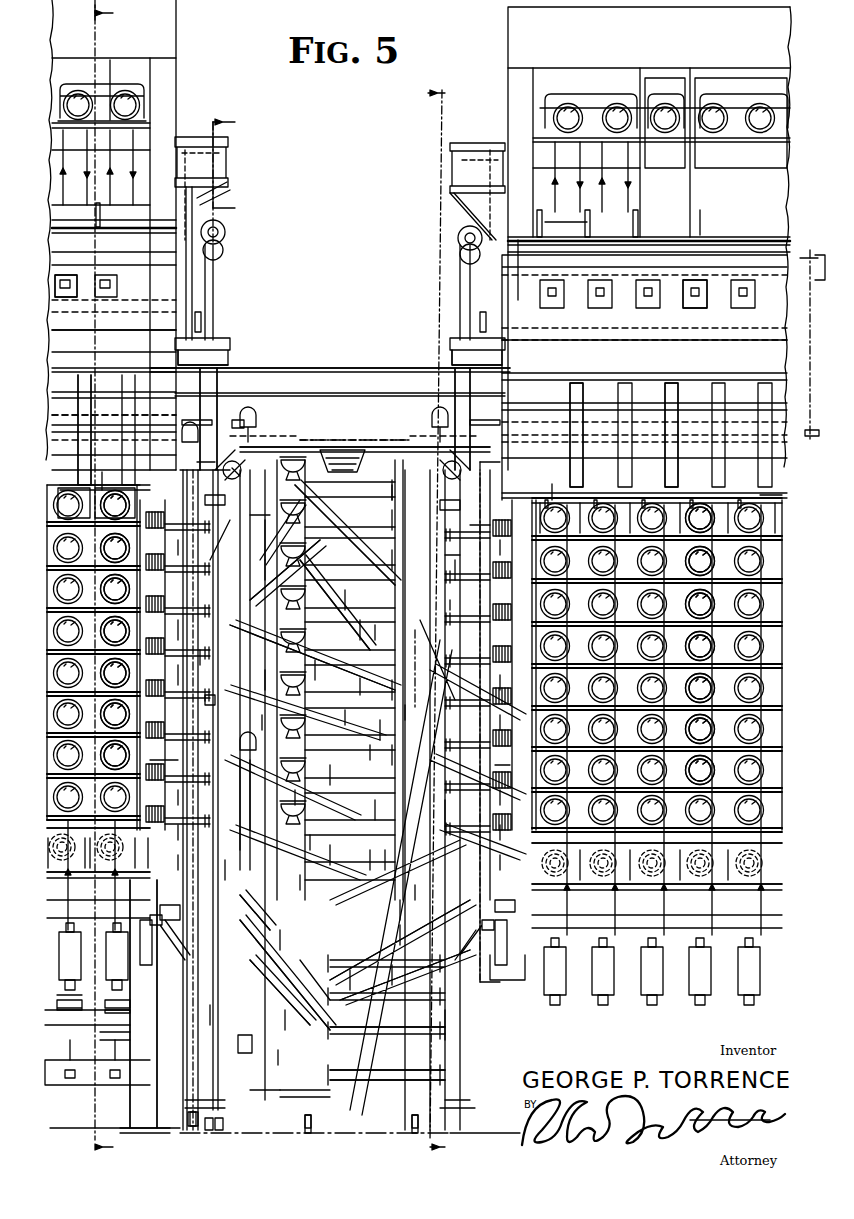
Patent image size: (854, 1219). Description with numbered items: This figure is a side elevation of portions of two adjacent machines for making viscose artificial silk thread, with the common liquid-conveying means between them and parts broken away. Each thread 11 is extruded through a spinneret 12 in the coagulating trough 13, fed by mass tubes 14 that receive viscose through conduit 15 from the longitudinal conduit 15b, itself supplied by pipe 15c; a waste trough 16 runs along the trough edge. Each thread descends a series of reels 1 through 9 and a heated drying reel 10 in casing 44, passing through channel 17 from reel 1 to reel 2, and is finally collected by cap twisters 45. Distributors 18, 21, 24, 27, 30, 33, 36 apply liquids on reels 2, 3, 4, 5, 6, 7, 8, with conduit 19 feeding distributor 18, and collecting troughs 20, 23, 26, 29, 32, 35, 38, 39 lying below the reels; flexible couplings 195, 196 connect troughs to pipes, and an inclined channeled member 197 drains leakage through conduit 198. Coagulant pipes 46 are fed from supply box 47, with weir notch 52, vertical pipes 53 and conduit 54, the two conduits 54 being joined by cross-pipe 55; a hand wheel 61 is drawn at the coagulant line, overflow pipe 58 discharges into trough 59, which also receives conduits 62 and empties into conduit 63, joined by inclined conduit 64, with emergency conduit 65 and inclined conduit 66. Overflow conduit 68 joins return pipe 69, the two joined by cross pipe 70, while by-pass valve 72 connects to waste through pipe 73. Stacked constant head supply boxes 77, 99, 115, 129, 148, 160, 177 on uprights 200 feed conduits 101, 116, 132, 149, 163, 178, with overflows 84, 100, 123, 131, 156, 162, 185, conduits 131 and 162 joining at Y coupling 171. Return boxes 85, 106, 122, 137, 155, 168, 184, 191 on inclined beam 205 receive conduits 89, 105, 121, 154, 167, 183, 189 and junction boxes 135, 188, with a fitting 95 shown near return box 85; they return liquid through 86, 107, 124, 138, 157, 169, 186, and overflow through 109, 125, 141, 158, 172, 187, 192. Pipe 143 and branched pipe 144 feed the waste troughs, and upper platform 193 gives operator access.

The thread-advancing reel 1 is at (107, 583).
The thread-advancing reel 2 is at (409, 626).
The thread-advancing reel 3 is at (409, 722).
The thread-advancing reel 4 is at (409, 722).
The thread-advancing reel 5 is at (409, 639).
The thread-advancing reel 6 is at (409, 578).
The thread-advancing reel 7 is at (409, 722).
The thread-advancing reel 8 is at (409, 703).
The thread-advancing reel 9 is at (409, 804).
The heated reel 10 is at (745, 875).
The thread 11 is at (630, 201).
The spinneret 12 is at (778, 550).
The coagulating trough 13 is at (232, 164).
The mass tube 14 is at (813, 248).
The viscose conduit 15 is at (725, 300).
The longitudinal viscose conduit 15b is at (425, 413).
The viscose supply pipe 15c is at (385, 1145).
The waste trough 16 is at (520, 254).
The channel 17 is at (675, 400).
The distributor 18 is at (690, 505).
The conduit 19 is at (655, 497).
The collecting trough 20 is at (782, 520).
The distributor 21 is at (687, 548).
The collecting trough 23 is at (782, 565).
The distributor 24 is at (686, 590).
The collecting trough 26 is at (782, 606).
The distributor 27 is at (686, 632).
The collecting trough 29 is at (782, 647).
The distributor 30 is at (686, 674).
The collecting trough 32 is at (782, 689).
The distributor 33 is at (686, 715).
The collecting trough 35 is at (782, 732).
The distributor 36 is at (686, 757).
The collecting trough 38 is at (782, 774).
The collecting trough 39 is at (782, 814).
The casing 44 is at (770, 862).
The cap twister 45 is at (702, 975).
The coagulant pipe 46 is at (646, 335).
The coagulating liquid supply box 47 is at (448, 157).
The weir notch 52 is at (476, 155).
The vertical pipe 53 is at (500, 216).
The coagulant conduit 54 is at (450, 760).
The cross-pipe 55 is at (245, 795).
The overflow pipe 58 is at (490, 150).
The trough 59 is at (450, 340).
The hand wheel 61 is at (455, 233).
The conduit 62 is at (457, 310).
The conduit 63 is at (190, 1070).
The inclined conduit 64 is at (278, 1054).
The emergency overflow conduit 65 is at (450, 356).
The inclined conduit 66 is at (370, 752).
The conduit 68 is at (500, 418).
The vertical return pipe 69 is at (331, 757).
The cross pipe 70 is at (300, 800).
The by-pass valve 72 is at (440, 512).
The pipe 73 is at (480, 517).
The constant head supply box 77 is at (383, 481).
The conduit 84 is at (320, 516).
The return box 85 is at (383, 686).
The return pipe 86 is at (470, 1023).
The pipe 89 is at (357, 625).
The pipe 95 is at (395, 707).
The constant head supply box 99 is at (381, 517).
The conduit 100 is at (195, 1098).
The conduit 101 is at (450, 553).
The conduit 105 is at (178, 628).
The main return box 106 is at (380, 730).
The conduit 107 is at (385, 860).
The pipe 109 is at (392, 755).
The constant head supply box 115 is at (384, 557).
The conduit 116 is at (455, 568).
The conduit 121 is at (178, 672).
The main return box 122 is at (330, 775).
The conduit 123 is at (328, 575).
The conduit 124 is at (406, 918).
The conduit 125 is at (375, 812).
The supply box 129 is at (339, 599).
The overflow conduit 131 is at (252, 840).
The conduit 132 is at (451, 600).
The junction box 135 is at (300, 840).
The main return box 137 is at (335, 860).
The conduit 138 is at (392, 975).
The conduit 141 is at (362, 860).
The pipe 143 is at (195, 1128).
The branched pipe 144 is at (350, 430).
The constant head supply box 148 is at (375, 628).
The conduit 149 is at (212, 655).
The inclined conduit 154 is at (334, 796).
The main return box 155 is at (292, 882).
The conduit 156 is at (318, 665).
The conduit 157 is at (385, 1012).
The conduit 158 is at (402, 934).
The constant head supply box 160 is at (352, 685).
The pipe 162 is at (264, 683).
The conduit 163 is at (212, 703).
The conduit 167 is at (417, 887).
The main return box 168 is at (280, 940).
The conduit 169 is at (375, 1049).
The Y coupling 171 is at (262, 722).
The conduit 172 is at (350, 978).
The constant head supply box 177 is at (336, 715).
The conduit 178 is at (220, 740).
The conduit 183 is at (393, 952).
The main return box 184 is at (265, 995).
The conduit 185 is at (268, 921).
The conduit 186 is at (370, 1090).
The conduit 187 is at (285, 1018).
The junction box 188 is at (515, 905).
The conduit 189 is at (365, 1012).
The return box 191 is at (240, 1050).
The conduit 192 is at (250, 1090).
The upper platform 193 is at (335, 365).
The flexible coupling 195 is at (332, 831).
The coupling 196 is at (334, 546).
The inclined channeled member 197 is at (333, 860).
The conduit 198 is at (505, 968).
The vertical upright 200 is at (395, 490).
The inclined beam 205 is at (230, 1115).